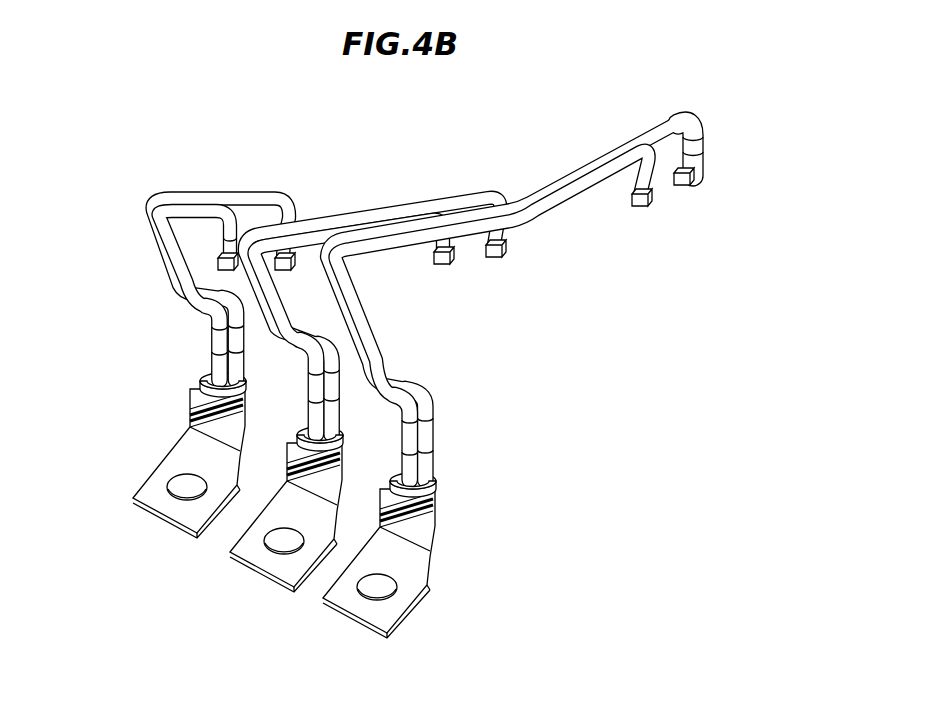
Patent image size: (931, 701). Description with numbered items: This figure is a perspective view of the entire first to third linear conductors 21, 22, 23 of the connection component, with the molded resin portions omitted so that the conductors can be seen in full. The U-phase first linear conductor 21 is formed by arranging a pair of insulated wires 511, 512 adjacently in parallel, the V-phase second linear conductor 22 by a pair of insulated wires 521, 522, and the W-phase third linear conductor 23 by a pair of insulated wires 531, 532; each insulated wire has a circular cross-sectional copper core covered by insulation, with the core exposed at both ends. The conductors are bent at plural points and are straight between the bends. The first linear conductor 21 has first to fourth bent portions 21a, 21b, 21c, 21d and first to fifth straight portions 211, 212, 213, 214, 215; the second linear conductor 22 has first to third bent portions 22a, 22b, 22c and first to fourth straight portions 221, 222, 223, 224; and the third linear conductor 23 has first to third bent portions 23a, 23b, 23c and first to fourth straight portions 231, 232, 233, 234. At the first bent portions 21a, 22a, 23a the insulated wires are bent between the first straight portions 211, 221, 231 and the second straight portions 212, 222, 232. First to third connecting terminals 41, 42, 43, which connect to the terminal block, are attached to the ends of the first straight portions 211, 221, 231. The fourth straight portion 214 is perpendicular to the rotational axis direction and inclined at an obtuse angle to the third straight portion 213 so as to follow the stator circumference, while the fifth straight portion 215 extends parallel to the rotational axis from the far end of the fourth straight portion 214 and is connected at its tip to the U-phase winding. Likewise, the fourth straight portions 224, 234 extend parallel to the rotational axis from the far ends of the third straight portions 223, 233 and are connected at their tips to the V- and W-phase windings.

The first linear conductor 21 is at (552, 265).
The first straight portion 211 is at (431, 440).
The second straight portion 212 is at (370, 337).
The third straight portion 213 is at (403, 230).
The fourth straight portion 214 is at (638, 134).
The fifth straight portion 215 is at (697, 153).
The first bent portion 21a is at (419, 378).
The second bent portion 21b is at (330, 233).
The third bent portion 21c is at (533, 230).
The fourth bent portion 21d is at (701, 110).
The second linear conductor 22 is at (291, 324).
The first straight portion 221 is at (335, 398).
The second straight portion 222 is at (258, 287).
The third straight portion 223 is at (453, 196).
The fourth straight portion 224 is at (452, 266).
The first bent portion 22a is at (321, 330).
The second bent portion 22b is at (247, 222).
The third bent portion 22c is at (507, 180).
The third linear conductor 23 is at (201, 285).
The first straight portion 231 is at (241, 343).
The second straight portion 232 is at (172, 257).
The third straight portion 233 is at (205, 189).
The fourth straight portion 234 is at (227, 242).
The first bent portion 23a is at (187, 311).
The second bent portion 23b is at (145, 192).
The third bent portion 23c is at (291, 191).
The first connecting terminal 41 is at (353, 622).
The second connecting terminal 42 is at (260, 577).
The third connecting terminal 43 is at (160, 526).
The insulated wire 511 is at (579, 176).
The insulated wire 512 is at (577, 187).
The insulated wire 521 is at (300, 446).
The insulated wire 522 is at (312, 425).
The insulated wire 531 is at (231, 388).
The insulated wire 532 is at (216, 382).